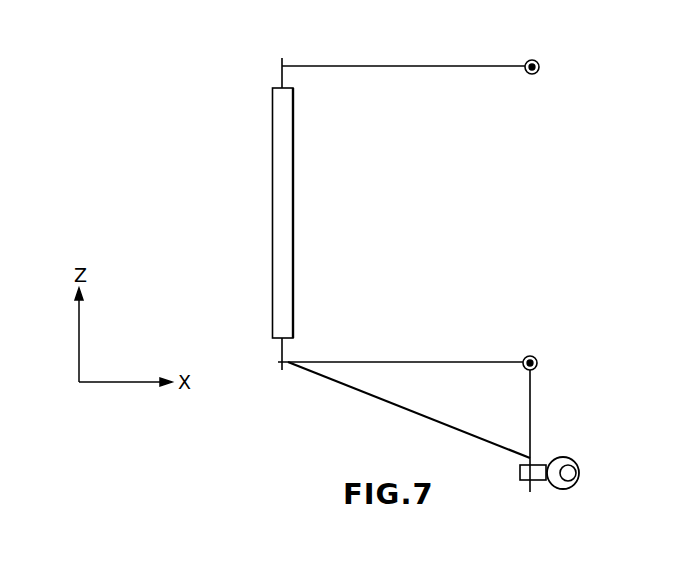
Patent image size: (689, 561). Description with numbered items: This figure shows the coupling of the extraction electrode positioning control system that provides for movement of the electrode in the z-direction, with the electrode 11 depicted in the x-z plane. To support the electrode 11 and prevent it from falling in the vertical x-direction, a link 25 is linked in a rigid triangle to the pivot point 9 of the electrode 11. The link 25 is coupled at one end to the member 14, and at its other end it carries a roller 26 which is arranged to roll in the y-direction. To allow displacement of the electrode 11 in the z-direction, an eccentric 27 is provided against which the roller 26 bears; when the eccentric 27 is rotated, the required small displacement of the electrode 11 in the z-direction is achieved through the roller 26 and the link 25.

The pivot point 9 is at (281, 66).
The electrode 11 is at (294, 213).
The member 14 is at (538, 72).
The link 25 is at (530, 405).
The roller 26 is at (520, 472).
The eccentric 27 is at (579, 478).